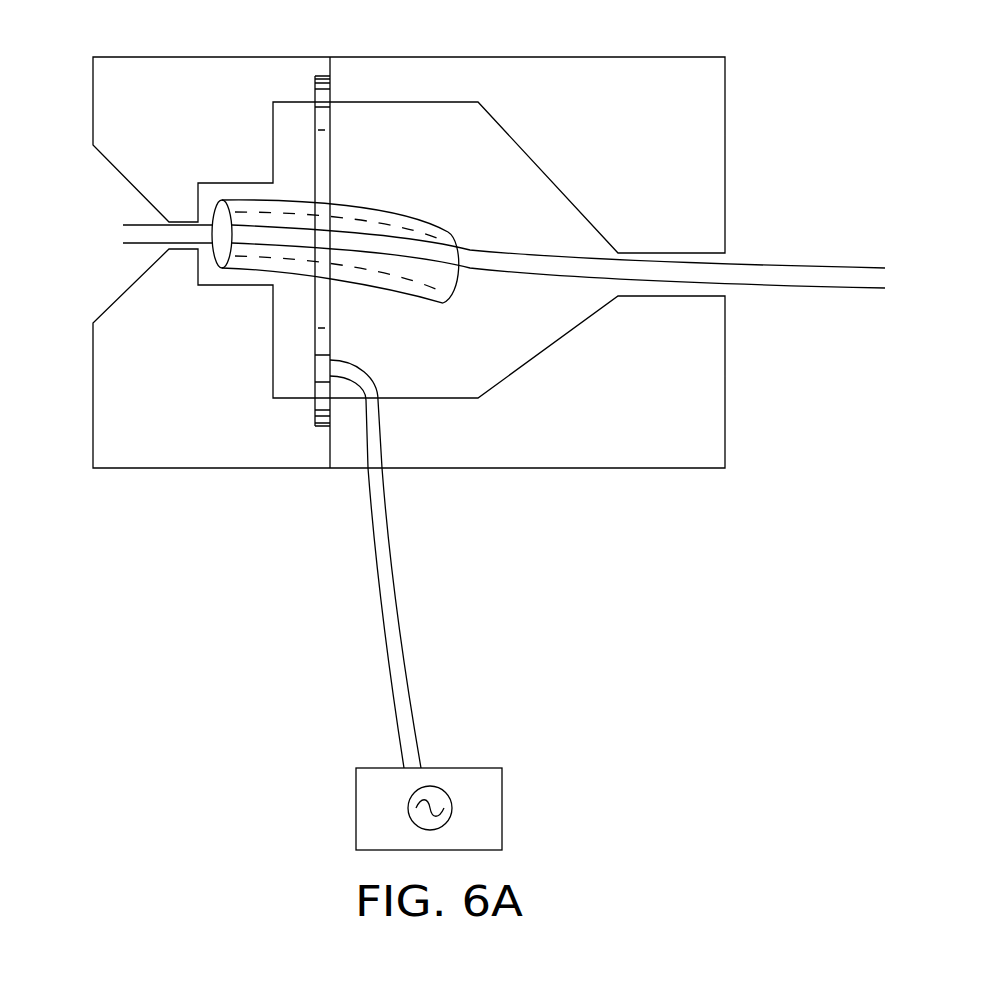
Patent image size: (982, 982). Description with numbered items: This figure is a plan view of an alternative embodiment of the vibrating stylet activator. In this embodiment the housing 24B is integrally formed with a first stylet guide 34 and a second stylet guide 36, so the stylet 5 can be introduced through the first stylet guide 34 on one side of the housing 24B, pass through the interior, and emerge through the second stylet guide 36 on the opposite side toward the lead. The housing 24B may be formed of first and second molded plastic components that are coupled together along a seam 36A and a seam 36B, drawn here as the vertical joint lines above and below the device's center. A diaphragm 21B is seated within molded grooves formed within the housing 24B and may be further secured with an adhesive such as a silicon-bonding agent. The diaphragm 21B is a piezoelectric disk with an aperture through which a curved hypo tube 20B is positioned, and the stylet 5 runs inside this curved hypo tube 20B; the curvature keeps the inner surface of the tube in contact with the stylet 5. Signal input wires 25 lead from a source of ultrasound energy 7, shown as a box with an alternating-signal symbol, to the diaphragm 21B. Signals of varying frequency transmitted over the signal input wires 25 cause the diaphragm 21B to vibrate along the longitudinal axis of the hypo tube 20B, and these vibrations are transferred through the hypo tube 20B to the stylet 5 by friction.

The stylet 5 is at (807, 288).
The source of ultrasound energy 7 is at (502, 813).
The curved hypo tube 20B is at (420, 297).
The diaphragm 21B is at (330, 173).
The housing 24B is at (93, 457).
The signal input wires 25 is at (380, 602).
The first stylet guide 34 is at (121, 186).
The second stylet guide 36 is at (733, 256).
The seam 36A is at (330, 72).
The seam 36B is at (329, 452).